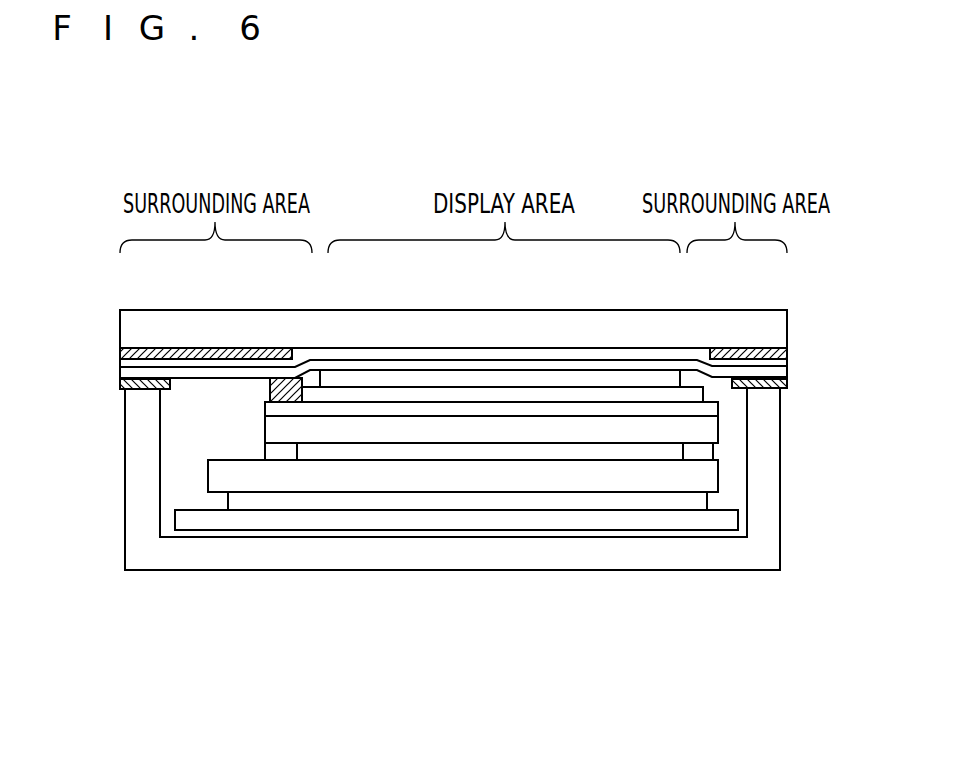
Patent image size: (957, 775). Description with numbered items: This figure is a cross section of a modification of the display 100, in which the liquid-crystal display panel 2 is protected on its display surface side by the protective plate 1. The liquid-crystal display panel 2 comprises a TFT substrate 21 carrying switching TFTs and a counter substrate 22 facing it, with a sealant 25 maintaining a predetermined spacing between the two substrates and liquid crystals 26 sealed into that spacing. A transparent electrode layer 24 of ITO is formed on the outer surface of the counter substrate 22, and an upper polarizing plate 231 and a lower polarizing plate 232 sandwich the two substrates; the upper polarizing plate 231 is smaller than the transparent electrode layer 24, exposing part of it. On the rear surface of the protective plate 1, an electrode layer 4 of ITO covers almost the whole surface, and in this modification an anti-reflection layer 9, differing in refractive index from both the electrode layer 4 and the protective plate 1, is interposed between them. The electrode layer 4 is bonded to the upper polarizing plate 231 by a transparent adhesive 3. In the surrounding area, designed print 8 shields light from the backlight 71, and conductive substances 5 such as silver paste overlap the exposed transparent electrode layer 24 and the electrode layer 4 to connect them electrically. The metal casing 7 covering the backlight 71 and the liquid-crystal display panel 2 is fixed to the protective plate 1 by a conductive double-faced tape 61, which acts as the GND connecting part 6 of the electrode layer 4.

The protective plate 1 is at (770, 332).
The liquid-crystal display panel 2 is at (837, 417).
The transparent adhesive 3 is at (592, 376).
The electrode layer 4 is at (345, 362).
The conductive substances 5 is at (295, 378).
The GND connecting part 6 is at (118, 381).
The double-faced tape 61 is at (120, 417).
The casing 7 is at (767, 551).
The designed print 8 is at (191, 348).
The anti-reflection layer 9 is at (646, 354).
The TFT substrate 21 is at (707, 478).
The counter substrate 22 is at (707, 430).
The transparent electrode layer 24 is at (443, 408).
The sealant 25 is at (275, 452).
The liquid crystals 26 is at (367, 450).
The backlight 71 is at (557, 520).
The display 100 is at (337, 606).
The upper polarizing plate 231 is at (522, 392).
The lower polarizing plate 232 is at (647, 500).